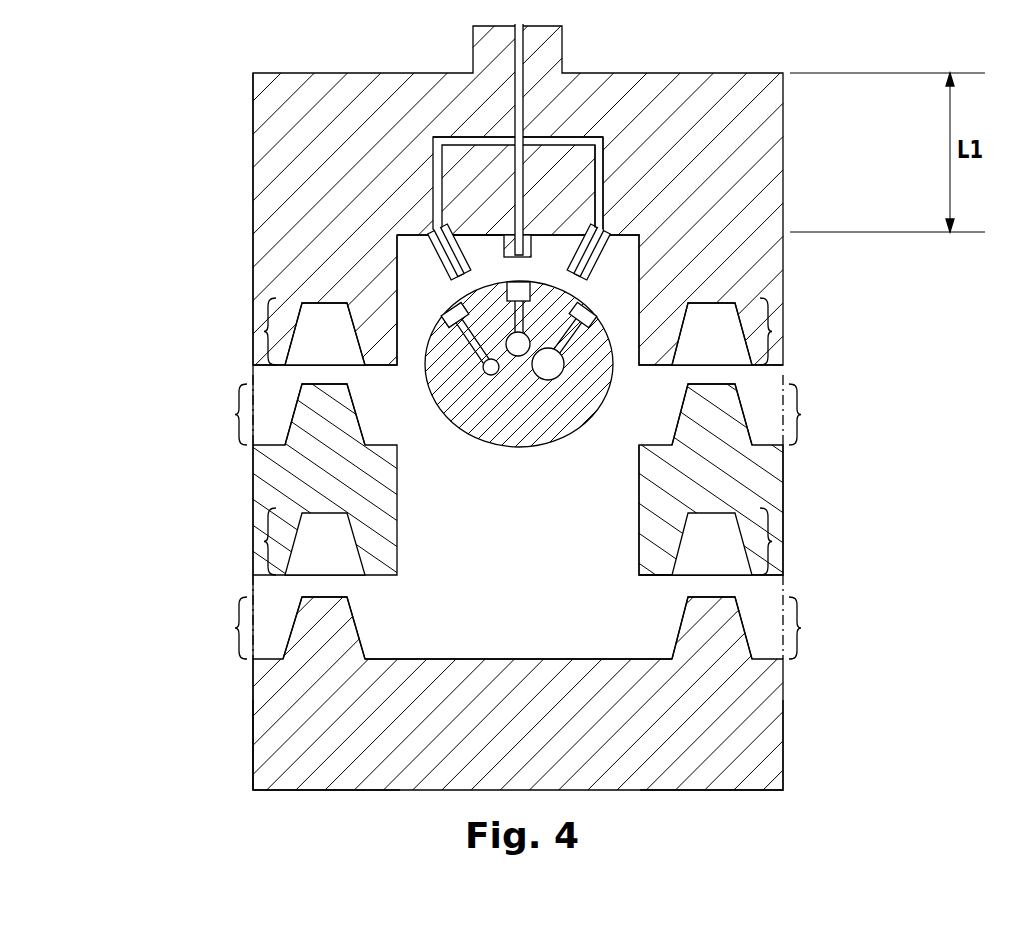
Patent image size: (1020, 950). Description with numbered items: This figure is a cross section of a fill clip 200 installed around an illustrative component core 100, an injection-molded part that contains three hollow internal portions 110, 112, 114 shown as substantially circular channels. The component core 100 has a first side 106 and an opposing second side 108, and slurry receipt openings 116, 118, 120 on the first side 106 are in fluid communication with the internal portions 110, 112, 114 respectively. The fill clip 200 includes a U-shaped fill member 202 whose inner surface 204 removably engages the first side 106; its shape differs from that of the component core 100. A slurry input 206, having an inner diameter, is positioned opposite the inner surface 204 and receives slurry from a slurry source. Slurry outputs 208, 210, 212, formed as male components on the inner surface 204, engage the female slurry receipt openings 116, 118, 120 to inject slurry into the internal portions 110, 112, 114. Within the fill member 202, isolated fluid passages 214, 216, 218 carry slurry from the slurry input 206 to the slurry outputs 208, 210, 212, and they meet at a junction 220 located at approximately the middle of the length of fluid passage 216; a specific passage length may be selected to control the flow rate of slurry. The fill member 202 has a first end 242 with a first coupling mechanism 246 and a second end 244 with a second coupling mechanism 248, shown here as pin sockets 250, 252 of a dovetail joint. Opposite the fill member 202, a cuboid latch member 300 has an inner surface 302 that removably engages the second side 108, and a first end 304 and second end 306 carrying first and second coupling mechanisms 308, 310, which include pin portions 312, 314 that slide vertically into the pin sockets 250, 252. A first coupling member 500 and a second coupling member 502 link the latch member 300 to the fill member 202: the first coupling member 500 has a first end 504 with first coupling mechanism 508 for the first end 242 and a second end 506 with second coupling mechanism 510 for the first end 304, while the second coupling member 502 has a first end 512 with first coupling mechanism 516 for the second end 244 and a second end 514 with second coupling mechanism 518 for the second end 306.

The component core 100 is at (452, 380).
The first side 106 is at (477, 263).
The second side 108 is at (573, 433).
The internal portion 110 is at (490, 376).
The internal portion 112 is at (517, 357).
The internal portion 114 is at (550, 380).
The slurry receipt opening 116 is at (455, 315).
The slurry receipt opening 118 is at (605, 270).
The slurry receipt opening 120 is at (583, 303).
The fill clip 200 is at (110, 116).
The fill member 202 is at (635, 45).
The inner surface 204 is at (407, 243).
The slurry input 206 is at (514, 42).
The slurry output 208 is at (455, 233).
The slurry output 210 is at (533, 237).
The slurry output 212 is at (617, 240).
The fluid passage 214 is at (443, 133).
The fluid passage 216 is at (600, 160).
The fluid passage 218 is at (600, 173).
The junction 220 is at (520, 137).
The first end 242 is at (292, 262).
The second end 244 is at (713, 293).
The first coupling mechanism 246 is at (262, 330).
The second coupling mechanism 248 is at (776, 330).
The pin socket 250 is at (332, 343).
The pin socket 252 is at (702, 338).
The latch member 300 is at (800, 720).
The inner surface 302 is at (565, 660).
The first end 304 is at (307, 738).
The second end 306 is at (735, 690).
The first coupling mechanism 308 is at (202, 633).
The second coupling mechanism 310 is at (829, 633).
The pin portion 312 is at (325, 638).
The pin portion 314 is at (705, 615).
The first coupling member 500 is at (222, 460).
The second coupling member 502 is at (800, 500).
The first end 504 is at (323, 428).
The second end 506 is at (368, 530).
The first coupling mechanism 508 is at (215, 414).
The second coupling mechanism 510 is at (262, 540).
The first end 512 is at (712, 428).
The second end 514 is at (655, 550).
The first coupling mechanism 516 is at (819, 414).
The second coupling mechanism 518 is at (776, 540).